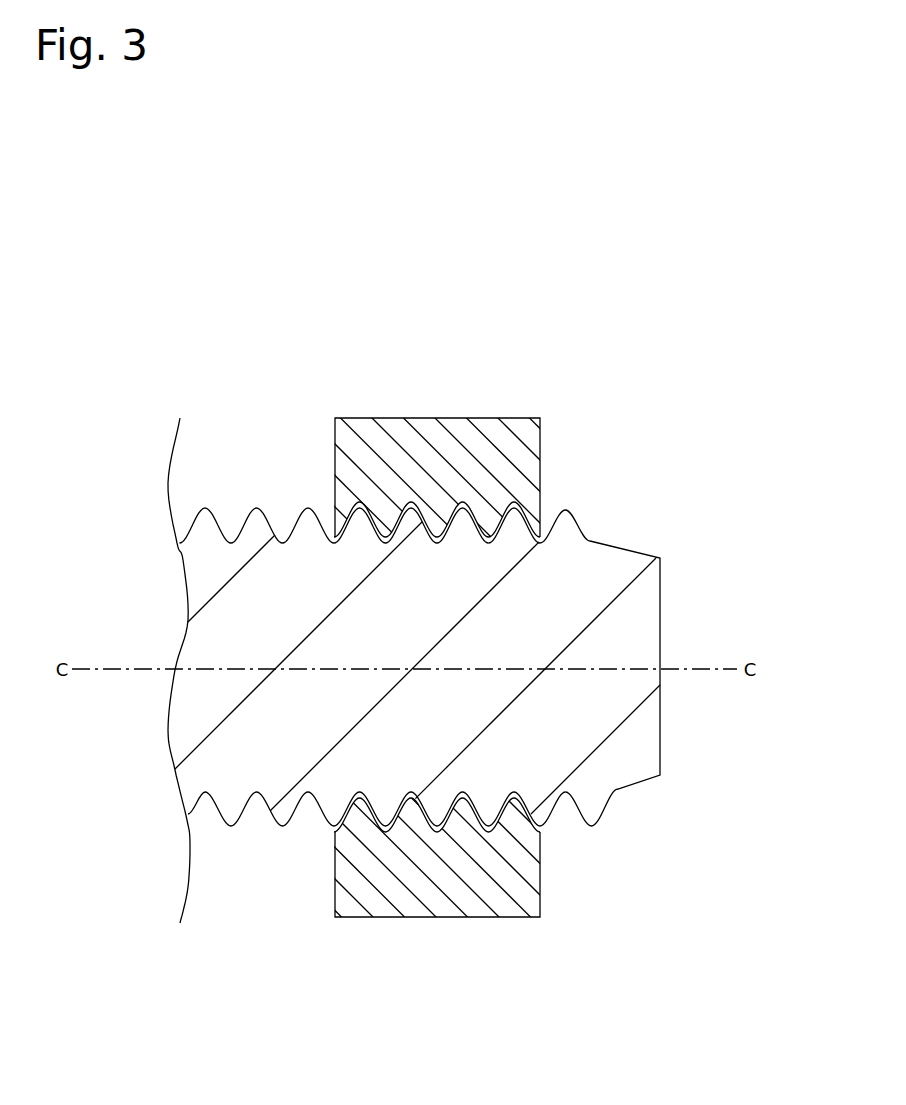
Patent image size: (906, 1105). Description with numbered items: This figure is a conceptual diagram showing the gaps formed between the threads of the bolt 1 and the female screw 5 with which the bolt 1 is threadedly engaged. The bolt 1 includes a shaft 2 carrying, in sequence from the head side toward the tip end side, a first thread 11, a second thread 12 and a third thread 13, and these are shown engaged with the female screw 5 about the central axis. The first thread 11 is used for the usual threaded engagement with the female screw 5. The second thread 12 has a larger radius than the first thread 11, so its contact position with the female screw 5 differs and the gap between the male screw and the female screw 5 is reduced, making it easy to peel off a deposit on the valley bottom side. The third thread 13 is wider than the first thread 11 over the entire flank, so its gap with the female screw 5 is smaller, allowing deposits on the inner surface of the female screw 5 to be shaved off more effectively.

The bolt 1 is at (478, 665).
The shaft 2 is at (655, 594).
The female screw 5 is at (417, 418).
The first thread 11 is at (259, 520).
The second thread 12 is at (463, 500).
The third thread 13 is at (516, 522).